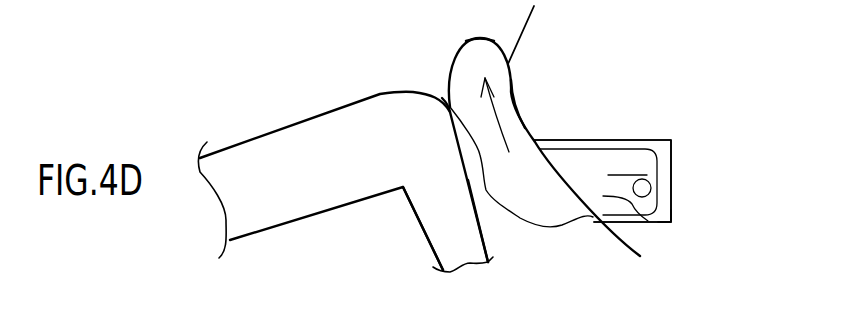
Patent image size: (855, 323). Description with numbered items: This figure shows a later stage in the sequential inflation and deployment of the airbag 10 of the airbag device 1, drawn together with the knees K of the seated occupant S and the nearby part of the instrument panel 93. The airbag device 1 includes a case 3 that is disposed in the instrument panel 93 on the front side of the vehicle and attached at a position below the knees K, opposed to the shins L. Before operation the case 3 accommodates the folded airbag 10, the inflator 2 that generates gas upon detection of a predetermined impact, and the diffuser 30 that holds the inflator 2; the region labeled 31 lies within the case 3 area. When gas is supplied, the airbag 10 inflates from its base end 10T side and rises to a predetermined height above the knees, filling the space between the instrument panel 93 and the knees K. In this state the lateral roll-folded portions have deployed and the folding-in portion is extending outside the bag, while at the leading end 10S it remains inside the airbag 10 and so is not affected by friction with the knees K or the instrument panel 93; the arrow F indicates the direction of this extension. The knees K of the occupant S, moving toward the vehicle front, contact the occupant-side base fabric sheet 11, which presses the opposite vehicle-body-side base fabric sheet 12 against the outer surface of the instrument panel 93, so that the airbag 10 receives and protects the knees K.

The occupant S is at (254, 129).
The airbag 10 is at (555, 217).
The leading end 10S is at (480, 38).
The knees K is at (447, 103).
The feed direction F is at (489, 115).
The instrument panel 93 is at (519, 51).
The vehicle-body-side base fabric sheet 12 is at (511, 92).
The airbag device 1 is at (680, 168).
The case 3 is at (672, 140).
The inner frame 31 is at (606, 183).
The inflator 2 is at (651, 187).
The base end 10T is at (672, 222).
The diffuser 30 is at (648, 221).
The occupant-side base fabric sheet 11 is at (483, 180).
The shins L is at (479, 217).